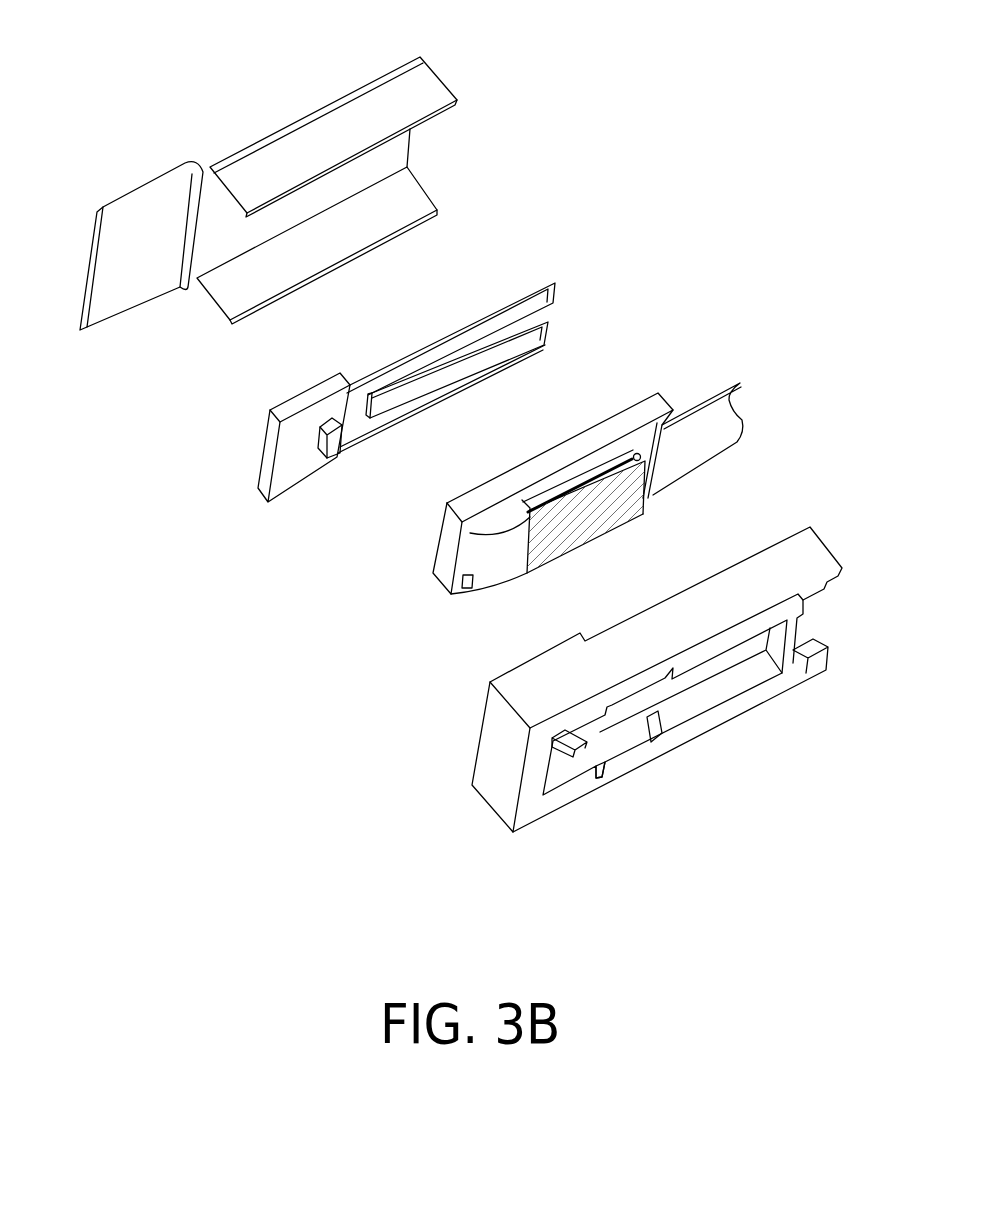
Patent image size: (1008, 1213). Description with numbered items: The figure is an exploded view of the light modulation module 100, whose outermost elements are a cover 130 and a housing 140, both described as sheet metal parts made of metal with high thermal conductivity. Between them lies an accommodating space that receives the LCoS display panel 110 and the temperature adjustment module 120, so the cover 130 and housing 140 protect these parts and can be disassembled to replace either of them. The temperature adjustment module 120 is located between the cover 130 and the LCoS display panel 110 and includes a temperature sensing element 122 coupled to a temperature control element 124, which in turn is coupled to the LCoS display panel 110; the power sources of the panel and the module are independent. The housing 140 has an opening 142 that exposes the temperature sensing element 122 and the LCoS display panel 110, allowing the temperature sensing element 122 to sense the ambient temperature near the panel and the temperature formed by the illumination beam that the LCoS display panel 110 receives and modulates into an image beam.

The light modulation module 100 is at (835, 925).
The liquid crystal on silicon (LCoS) display panel 110 is at (582, 527).
The temperature adjustment module 120 is at (406, 392).
The temperature sensing element 122 is at (333, 447).
The temperature control element 124 is at (537, 287).
The cover 130 is at (337, 128).
The housing 140 is at (760, 568).
The opening 142 is at (616, 728).